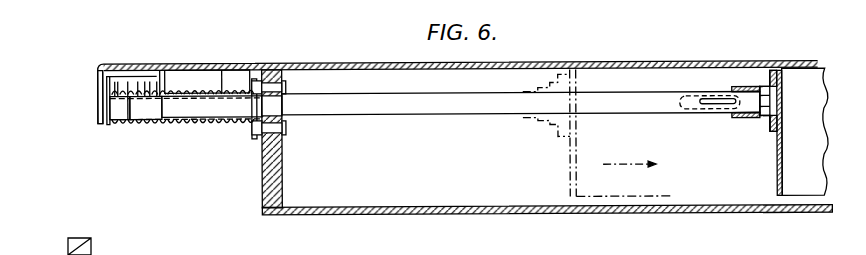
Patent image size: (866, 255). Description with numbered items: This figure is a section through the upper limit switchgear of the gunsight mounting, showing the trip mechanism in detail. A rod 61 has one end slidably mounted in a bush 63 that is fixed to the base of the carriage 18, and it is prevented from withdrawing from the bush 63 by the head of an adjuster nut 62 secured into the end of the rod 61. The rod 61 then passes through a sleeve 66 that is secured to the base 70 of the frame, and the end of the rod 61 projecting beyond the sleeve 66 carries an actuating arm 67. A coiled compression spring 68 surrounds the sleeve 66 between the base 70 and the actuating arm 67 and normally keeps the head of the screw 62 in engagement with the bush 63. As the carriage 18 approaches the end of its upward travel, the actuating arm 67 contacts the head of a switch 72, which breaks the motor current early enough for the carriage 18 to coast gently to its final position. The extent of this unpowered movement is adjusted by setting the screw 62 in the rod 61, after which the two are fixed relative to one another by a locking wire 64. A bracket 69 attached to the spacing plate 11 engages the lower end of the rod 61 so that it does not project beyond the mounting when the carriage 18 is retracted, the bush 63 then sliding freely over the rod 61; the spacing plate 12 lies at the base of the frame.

The spacing plate 11 is at (466, 62).
The spacing plate 12 is at (448, 210).
The carriage 18 is at (572, 162).
The rod 61 is at (418, 110).
The adjuster nut 62 is at (770, 107).
The bush 63 is at (758, 118).
The locking wire 64 is at (710, 100).
The sleeve 66 is at (228, 123).
The actuating arm 67 is at (111, 123).
The coiled compression spring 68 is at (175, 124).
The bracket 69 is at (98, 93).
The base 70 is at (262, 178).
The switch 72 is at (194, 80).